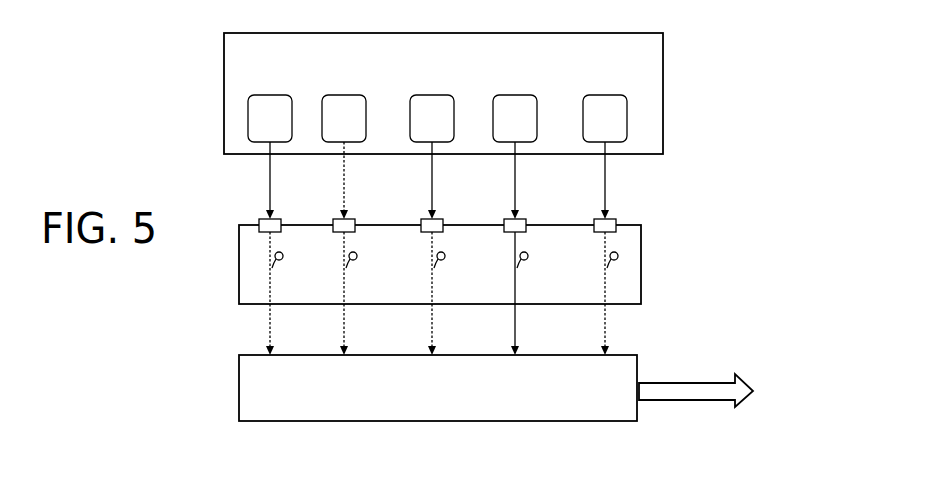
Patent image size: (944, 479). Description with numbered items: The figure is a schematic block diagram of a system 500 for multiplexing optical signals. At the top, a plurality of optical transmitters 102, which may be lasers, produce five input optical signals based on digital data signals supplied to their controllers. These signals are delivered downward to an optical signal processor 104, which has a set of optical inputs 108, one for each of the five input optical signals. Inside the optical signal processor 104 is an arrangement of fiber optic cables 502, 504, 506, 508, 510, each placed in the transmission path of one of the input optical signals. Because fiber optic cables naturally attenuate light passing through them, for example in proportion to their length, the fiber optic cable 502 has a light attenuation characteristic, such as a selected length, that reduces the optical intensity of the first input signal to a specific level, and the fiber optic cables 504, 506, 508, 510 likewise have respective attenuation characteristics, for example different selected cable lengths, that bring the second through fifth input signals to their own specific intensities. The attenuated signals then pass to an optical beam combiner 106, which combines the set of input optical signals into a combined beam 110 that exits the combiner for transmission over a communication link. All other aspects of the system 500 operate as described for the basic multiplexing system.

The system for multiplexing optical signals 500 is at (779, 81).
The optical transmitters 102 is at (663, 60).
The optical signal processor 104 is at (641, 242).
The optical beam combiner 106 is at (640, 363).
The optical inputs 108 is at (277, 212).
The combined beam 110 is at (685, 402).
The fiber optic cable 502 is at (260, 270).
The fiber optic cable 504 is at (337, 270).
The fiber optic cable 506 is at (423, 270).
The fiber optic cable 508 is at (498, 270).
The fiber optic cable 510 is at (598, 270).